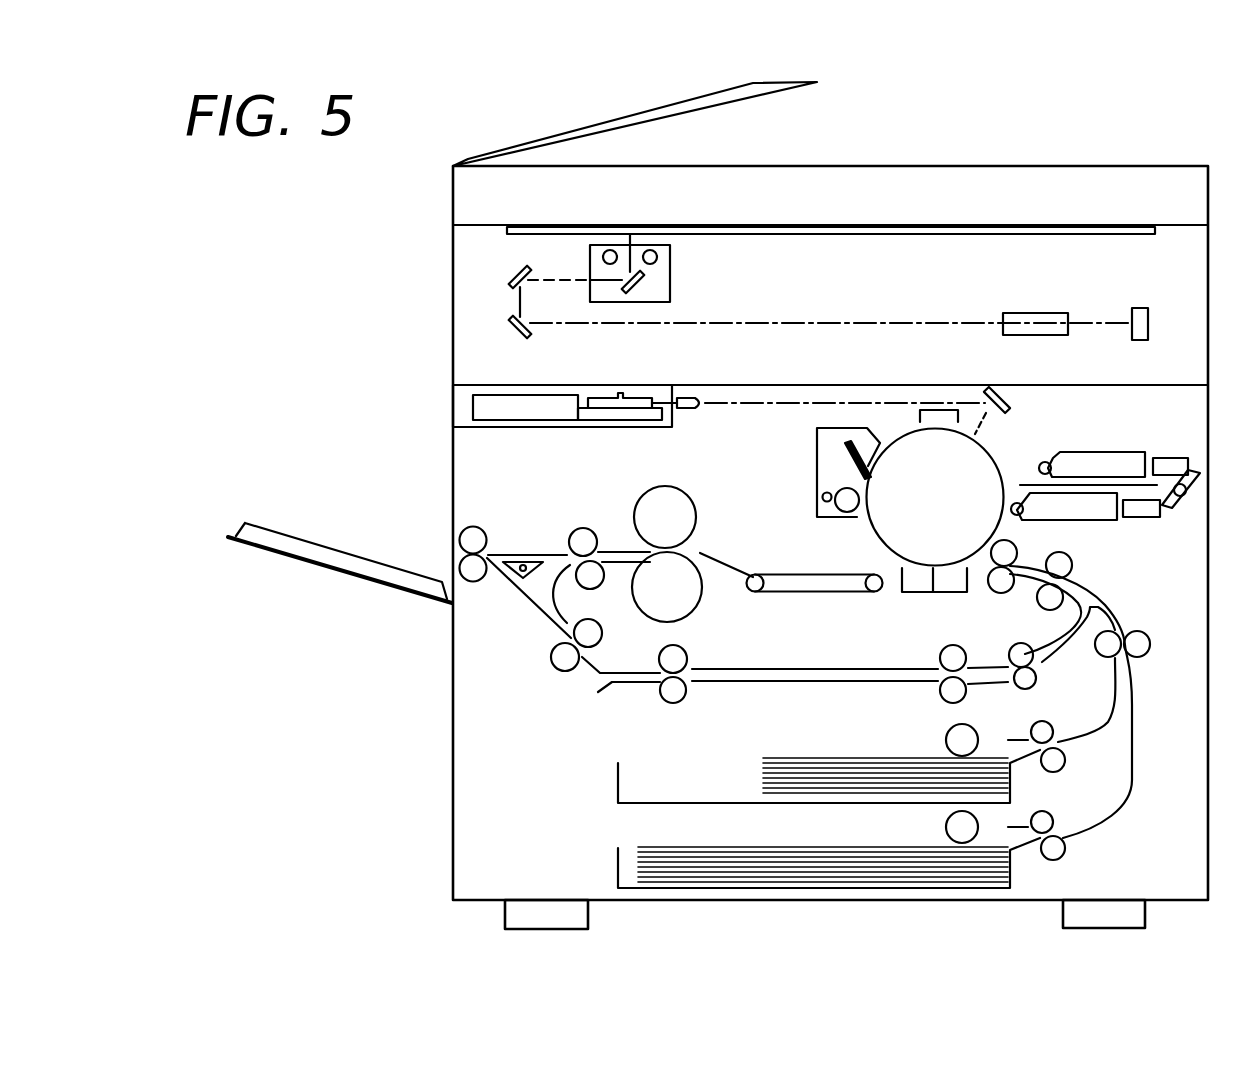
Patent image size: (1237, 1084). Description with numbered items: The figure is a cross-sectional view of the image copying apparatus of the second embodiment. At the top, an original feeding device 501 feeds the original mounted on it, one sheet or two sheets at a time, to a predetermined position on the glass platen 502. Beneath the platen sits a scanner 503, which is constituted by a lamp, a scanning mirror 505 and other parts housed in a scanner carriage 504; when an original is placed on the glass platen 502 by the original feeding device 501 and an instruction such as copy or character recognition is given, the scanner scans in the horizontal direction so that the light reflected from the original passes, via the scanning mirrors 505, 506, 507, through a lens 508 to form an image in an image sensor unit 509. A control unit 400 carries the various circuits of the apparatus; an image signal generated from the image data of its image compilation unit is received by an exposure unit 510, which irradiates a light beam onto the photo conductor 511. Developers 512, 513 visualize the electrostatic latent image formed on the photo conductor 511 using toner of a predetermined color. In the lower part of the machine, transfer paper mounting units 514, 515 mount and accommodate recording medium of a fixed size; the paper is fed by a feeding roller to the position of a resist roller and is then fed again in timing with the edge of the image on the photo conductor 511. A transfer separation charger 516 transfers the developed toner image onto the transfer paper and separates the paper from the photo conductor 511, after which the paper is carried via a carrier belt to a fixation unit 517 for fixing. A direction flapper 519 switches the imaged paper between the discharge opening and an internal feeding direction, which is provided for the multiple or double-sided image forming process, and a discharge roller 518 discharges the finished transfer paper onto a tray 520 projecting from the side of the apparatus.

The control unit 400 is at (472, 404).
The original feeding device 501 is at (582, 134).
The glass platen 502 is at (1093, 232).
The scanner 503 is at (650, 250).
The scanner unit 504 is at (670, 265).
The scanning mirror 505 is at (642, 287).
The scanning mirror 506 is at (514, 278).
The scanning mirror 507 is at (510, 318).
The lens 508 is at (1048, 312).
The image sensor unit 509 is at (1140, 308).
The exposure unit 510 is at (592, 390).
The photo conductor 511 is at (886, 529).
The developer 512 is at (1096, 462).
The developer 513 is at (1085, 512).
The transfer paper mounting unit 514 is at (1005, 792).
The transfer paper mounting unit 515 is at (1005, 880).
The transfer separation charger 516 is at (915, 592).
The fixation unit 517 is at (657, 565).
The discharge roller 518 is at (460, 560).
The direction flapper 519 is at (514, 572).
The discharge tray 520 is at (308, 563).